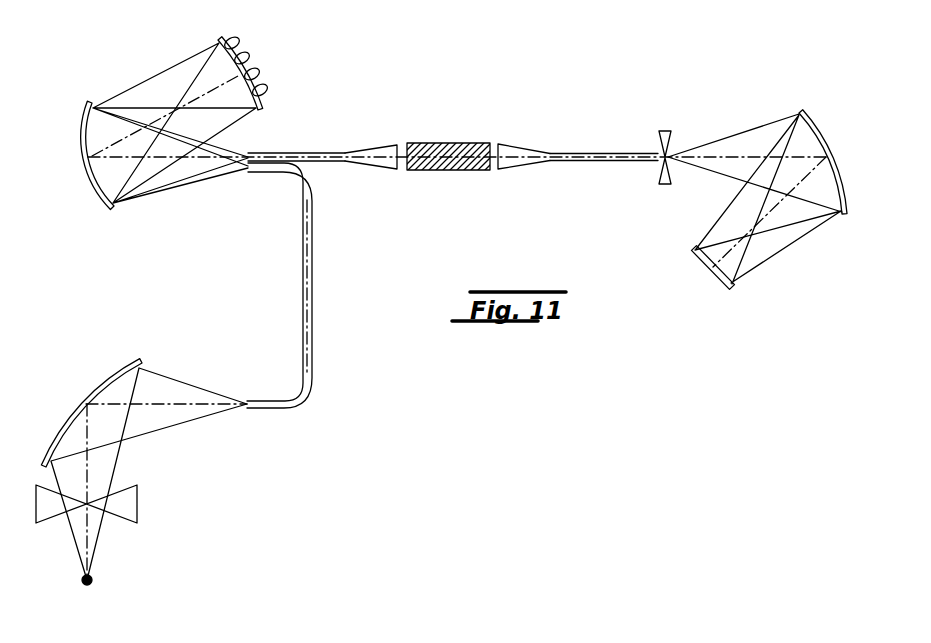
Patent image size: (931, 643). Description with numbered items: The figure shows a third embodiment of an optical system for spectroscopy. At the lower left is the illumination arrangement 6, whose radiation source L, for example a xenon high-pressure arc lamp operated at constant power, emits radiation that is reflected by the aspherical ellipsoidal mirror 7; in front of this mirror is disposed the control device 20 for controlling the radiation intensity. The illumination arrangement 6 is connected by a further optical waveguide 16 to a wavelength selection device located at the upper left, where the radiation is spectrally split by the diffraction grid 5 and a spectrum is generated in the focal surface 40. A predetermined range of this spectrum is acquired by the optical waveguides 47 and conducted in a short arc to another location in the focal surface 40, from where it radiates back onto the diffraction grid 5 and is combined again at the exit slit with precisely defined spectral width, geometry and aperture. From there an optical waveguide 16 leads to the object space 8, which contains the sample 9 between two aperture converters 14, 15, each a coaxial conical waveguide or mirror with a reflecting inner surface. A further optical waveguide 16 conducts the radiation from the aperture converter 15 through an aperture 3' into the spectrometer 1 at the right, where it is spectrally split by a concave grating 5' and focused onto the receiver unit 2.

The spectrometer 1 is at (808, 297).
The receiver unit 2 is at (717, 277).
The aperture / exit point 3' is at (684, 134).
The diffraction grid 5 is at (159, 129).
The concave mirror 5' is at (757, 169).
The illumination arrangement 6 is at (250, 478).
The aspherical ellipsoidal mirror 7 is at (95, 393).
The object space 8 is at (430, 212).
The sample 9 is at (452, 150).
The aperture converter 14 is at (380, 147).
The aperture converter 15 is at (523, 148).
The optical waveguide 16 is at (313, 152).
The control device 20 is at (130, 499).
The focal surface 40 is at (218, 42).
The optical waveguides 47 is at (255, 71).
The radiation source L is at (93, 580).